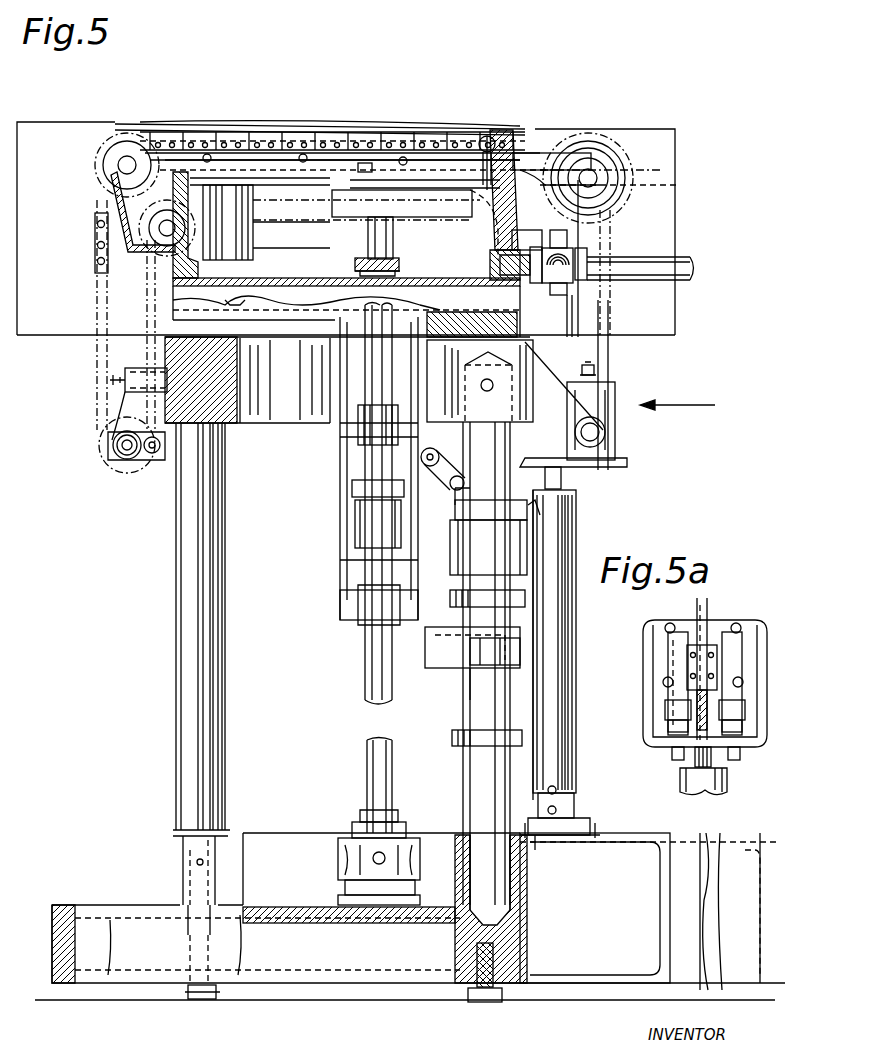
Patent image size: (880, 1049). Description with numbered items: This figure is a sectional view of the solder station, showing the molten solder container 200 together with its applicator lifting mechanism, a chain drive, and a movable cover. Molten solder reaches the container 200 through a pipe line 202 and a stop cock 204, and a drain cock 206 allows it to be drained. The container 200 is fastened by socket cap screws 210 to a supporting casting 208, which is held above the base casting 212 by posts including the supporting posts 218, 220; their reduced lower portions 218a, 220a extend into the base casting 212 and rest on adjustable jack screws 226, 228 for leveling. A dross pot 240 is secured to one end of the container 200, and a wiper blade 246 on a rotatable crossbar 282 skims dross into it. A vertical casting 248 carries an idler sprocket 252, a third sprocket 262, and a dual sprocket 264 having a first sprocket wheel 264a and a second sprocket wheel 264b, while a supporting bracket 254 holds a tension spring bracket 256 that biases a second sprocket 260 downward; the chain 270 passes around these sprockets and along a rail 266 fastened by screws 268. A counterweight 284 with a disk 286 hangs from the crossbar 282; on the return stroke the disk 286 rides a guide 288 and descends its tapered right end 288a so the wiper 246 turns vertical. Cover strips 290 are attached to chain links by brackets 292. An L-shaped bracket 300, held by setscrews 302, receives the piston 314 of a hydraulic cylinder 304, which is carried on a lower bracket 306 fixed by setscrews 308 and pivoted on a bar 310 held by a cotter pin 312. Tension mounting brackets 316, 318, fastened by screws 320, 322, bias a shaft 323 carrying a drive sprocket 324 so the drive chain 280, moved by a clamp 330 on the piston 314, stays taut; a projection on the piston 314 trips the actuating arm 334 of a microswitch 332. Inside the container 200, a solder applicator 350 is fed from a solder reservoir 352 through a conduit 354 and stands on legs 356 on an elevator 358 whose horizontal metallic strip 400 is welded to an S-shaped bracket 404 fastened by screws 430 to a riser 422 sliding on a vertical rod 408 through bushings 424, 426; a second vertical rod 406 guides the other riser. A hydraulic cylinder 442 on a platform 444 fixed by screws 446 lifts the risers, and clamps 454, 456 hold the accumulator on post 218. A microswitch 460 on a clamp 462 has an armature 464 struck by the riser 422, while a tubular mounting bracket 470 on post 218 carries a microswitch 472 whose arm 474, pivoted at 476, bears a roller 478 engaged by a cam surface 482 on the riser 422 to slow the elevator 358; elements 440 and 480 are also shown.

In FIG. 5, the container for molten solder 200 is at (270, 272).
In FIG. 5, the pipe line 202 is at (655, 278).
In FIG. 5, the stop cock 204 is at (545, 262).
In FIG. 5, the drain cock 206 is at (522, 228).
In FIG. 5, the supporting casting 208 is at (515, 340).
In FIG. 5, the screws 210 is at (235, 300).
In FIG. 5, the base casting 212 is at (298, 840).
In FIG. 5, the supporting post 218 is at (500, 440).
In FIG. 5, the reduced lower end portion of post 218a is at (490, 900).
In FIG. 5, the supporting post 220 is at (205, 788).
In FIG. 5, the reduced lower end portion of post 220a is at (185, 850).
In FIG. 5, the jack screw 226 is at (470, 1000).
In FIG. 5, the jack screw 228 is at (218, 995).
In FIG. 5, the dross pot 240 is at (125, 246).
In FIG. 5, the wiper blade 246 is at (470, 202).
In FIG. 5, the vertical casting 248 is at (636, 162).
In FIG. 5, the idler sprocket 252 is at (120, 158).
In FIG. 5, the supporting bracket 254 is at (125, 373).
In FIG. 5, the tension spring bracket 256 is at (163, 458).
In FIG. 5, the second sprocket 260 is at (122, 458).
In FIG. 5, the third sprocket 262 is at (96, 256).
In FIG. 5, the dual sprocket 264 is at (615, 145).
In FIG. 5, the first sprocket wheel 264a is at (590, 150).
In FIG. 5, the second sprocket wheel 264b is at (640, 182).
In FIG. 5, the rail 266 is at (300, 125).
In FIG. 5, the screws 268 is at (260, 140).
In FIG. 5, the chain 270 is at (95, 244).
In FIG. 5, the drive chain 280 is at (610, 360).
In FIG. 5A, the drive chain 280 is at (705, 600).
In FIG. 5, the crossbar 282 is at (495, 165).
In FIG. 5, the counterweight 284 is at (555, 170).
In FIG. 5, the disk 286 is at (495, 240).
In FIG. 5, the guide 288 is at (298, 155).
In FIG. 5, the tapered right end of guide 288a is at (496, 140).
In FIG. 5, the strips 290 is at (262, 128).
In FIG. 5, the brackets 292 is at (140, 127).
In FIG. 5A, the L-shaped bracket 300 is at (648, 652).
In FIG. 5, the setscrews 302 is at (595, 375).
In FIG. 5A, the setscrews 302 is at (665, 625).
In FIG. 5, the hydraulic cylinder 304 is at (545, 748).
In FIG. 5A, the hydraulic cylinder 304 is at (728, 780).
In FIG. 5, the lower bracket 306 is at (560, 840).
In FIG. 5, the setscrews 308 is at (528, 830).
In FIG. 5, the bar 310 is at (560, 805).
In FIG. 5, the cotter pin 312 is at (582, 816).
In FIG. 5, the piston 314 is at (562, 480).
In FIG. 5A, the piston 314 is at (695, 765).
In FIG. 5A, the tension mounting bracket 316 is at (668, 640).
In FIG. 5A, the tension mounting bracket 318 is at (730, 656).
In FIG. 5, the screw 320 is at (628, 466).
In FIG. 5A, the screw 320 is at (672, 755).
In FIG. 5A, the screw 322 is at (738, 752).
In FIG. 5A, the shaft 323 is at (685, 705).
In FIG. 5A, the drive sprocket 324 is at (685, 722).
In FIG. 5A, the clamp 330 is at (698, 625).
In FIG. 5, the microswitch 332 is at (595, 430).
In FIG. 5, the actuating arm 334 is at (605, 445).
In FIG. 5, the solder applicator 350 is at (350, 222).
In FIG. 5, the solder reservoir 352 is at (300, 222).
In FIG. 5, the conduit 354 is at (300, 248).
In FIG. 5, the legs 356 is at (385, 240).
In FIG. 5, the elevator 358 is at (400, 265).
In FIG. 5, the horizontal metallic strip 400 is at (355, 263).
In FIG. 5, the S-shaped metallic bracket 404 is at (368, 180).
In FIG. 5, the vertical rod 406 is at (368, 773).
In FIG. 5, the vertical rod 408 is at (365, 322).
In FIG. 5, the riser 422 is at (410, 350).
In FIG. 5, the ball bearing bushing 424 is at (360, 605).
In FIG. 5, the ball bearing bushing 426 is at (380, 430).
In FIG. 5, the screws 430 is at (366, 162).
In FIG. 5, the bar 440 is at (352, 488).
In FIG. 5, the hydraulic cylinder 442 is at (340, 862).
In FIG. 5, the platform 444 is at (375, 920).
In FIG. 5, the screws 446 is at (345, 886).
In FIG. 5, the clamp 454 is at (455, 740).
In FIG. 5, the clamp 456 is at (540, 570).
In FIG. 5, the microswitch 460 is at (430, 630).
In FIG. 5, the mounting bracket or clamp 462 is at (500, 655).
In FIG. 5, the armature 464 is at (435, 655).
In FIG. 5, the tubular mounting bracket 470 is at (490, 596).
In FIG. 5, the microswitch 472 is at (478, 555).
In FIG. 5, the actuating arm 474 is at (450, 490).
In FIG. 5, the pivot 476 is at (480, 520).
In FIG. 5, the roller 478 is at (445, 440).
In FIG. 5, the fitting 480 is at (545, 530).
In FIG. 5, the cam surface 482 is at (430, 640).